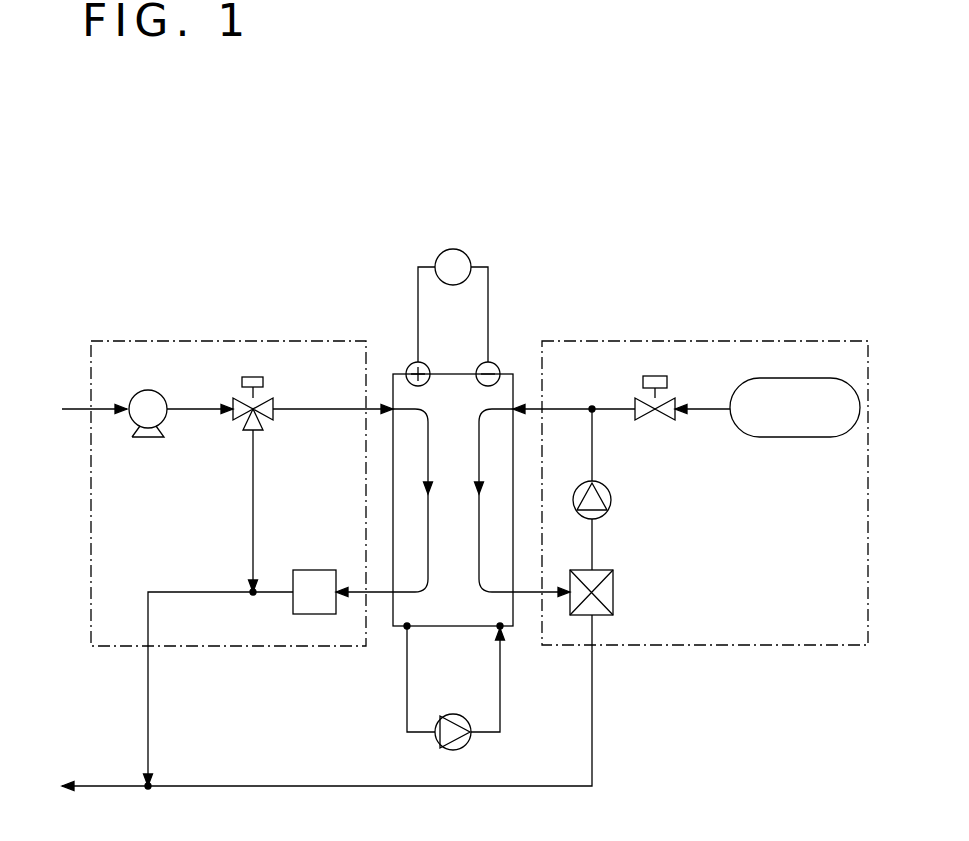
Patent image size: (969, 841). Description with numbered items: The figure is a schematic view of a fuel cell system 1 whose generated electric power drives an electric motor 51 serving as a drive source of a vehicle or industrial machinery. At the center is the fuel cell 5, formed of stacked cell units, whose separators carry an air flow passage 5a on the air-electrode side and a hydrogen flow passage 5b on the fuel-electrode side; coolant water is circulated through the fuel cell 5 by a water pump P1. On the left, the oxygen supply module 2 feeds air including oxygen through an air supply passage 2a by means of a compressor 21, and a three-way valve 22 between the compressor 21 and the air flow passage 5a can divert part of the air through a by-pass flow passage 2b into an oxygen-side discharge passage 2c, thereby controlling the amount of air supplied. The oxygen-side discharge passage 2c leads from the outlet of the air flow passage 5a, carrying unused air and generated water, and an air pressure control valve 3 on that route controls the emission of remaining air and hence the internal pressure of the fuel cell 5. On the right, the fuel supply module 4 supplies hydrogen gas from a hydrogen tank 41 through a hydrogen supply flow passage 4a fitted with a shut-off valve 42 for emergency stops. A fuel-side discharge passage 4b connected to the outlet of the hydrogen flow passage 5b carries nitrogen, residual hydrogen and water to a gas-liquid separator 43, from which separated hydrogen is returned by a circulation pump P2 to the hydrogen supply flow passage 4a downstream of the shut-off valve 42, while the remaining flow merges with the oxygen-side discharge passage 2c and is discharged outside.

The fuel cell system 1 is at (108, 231).
The oxygen supply module 2 is at (155, 341).
The air supply passage 2a is at (105, 409).
The by-pass flow passage 2b is at (253, 470).
The oxygen-side discharge passage 2c is at (190, 592).
The compressor 21 is at (143, 392).
The three-way valve 22 is at (263, 377).
The air pressure control valve 3 is at (312, 570).
The fuel supply module 4 is at (740, 341).
The hydrogen supply flow passage 4a is at (568, 409).
The fuel-side discharge passage 4b is at (592, 720).
The hydrogen tank 41 is at (808, 437).
The shut-off valve 42 is at (657, 422).
The gas-liquid separator 43 is at (615, 592).
The fuel cell 5 is at (454, 374).
The air flow passage 5a is at (428, 476).
The hydrogen flow passage 5b is at (479, 566).
The electric motor 51 is at (454, 249).
The water pump P1 is at (460, 714).
The circulation pump P2 is at (611, 500).